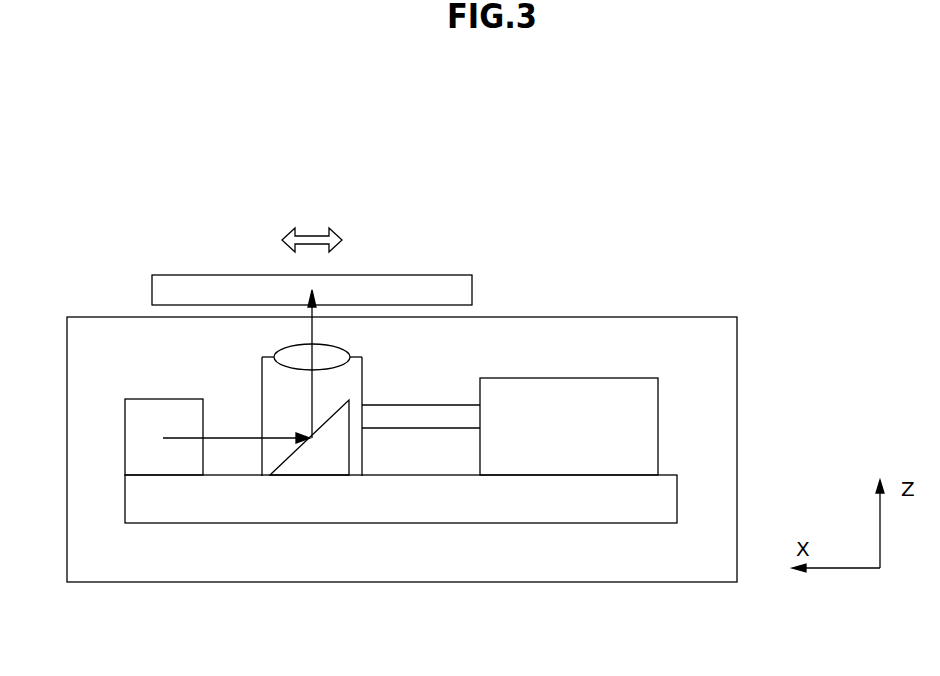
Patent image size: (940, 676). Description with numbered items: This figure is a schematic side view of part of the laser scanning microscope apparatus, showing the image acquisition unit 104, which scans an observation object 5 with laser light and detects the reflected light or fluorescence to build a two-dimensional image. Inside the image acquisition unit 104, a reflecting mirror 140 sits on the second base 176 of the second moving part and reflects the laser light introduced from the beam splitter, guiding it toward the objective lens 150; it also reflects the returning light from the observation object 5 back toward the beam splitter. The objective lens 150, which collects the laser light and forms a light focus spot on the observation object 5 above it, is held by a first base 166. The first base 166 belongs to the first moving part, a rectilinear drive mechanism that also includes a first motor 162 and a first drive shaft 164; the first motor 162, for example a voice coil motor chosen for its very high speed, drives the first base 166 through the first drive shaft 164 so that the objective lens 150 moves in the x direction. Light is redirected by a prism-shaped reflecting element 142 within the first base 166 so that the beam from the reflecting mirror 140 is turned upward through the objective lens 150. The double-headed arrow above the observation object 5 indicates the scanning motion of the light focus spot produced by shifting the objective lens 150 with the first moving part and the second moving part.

The observation object 5 is at (440, 273).
The image acquisition unit 104 is at (564, 313).
The reflecting mirror 140 is at (172, 397).
The prism (reflecting member) 142 is at (352, 452).
The objective lens 150 is at (340, 347).
The first motor 162 is at (605, 377).
The first drive shaft 164 is at (462, 403).
The first base 166 is at (347, 385).
The second base 176 is at (568, 527).